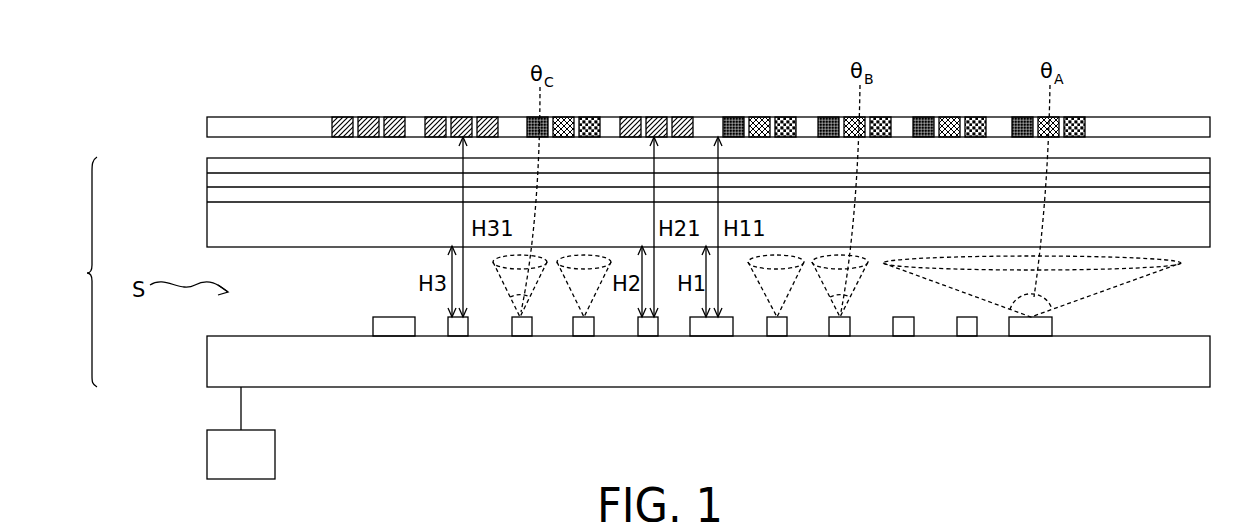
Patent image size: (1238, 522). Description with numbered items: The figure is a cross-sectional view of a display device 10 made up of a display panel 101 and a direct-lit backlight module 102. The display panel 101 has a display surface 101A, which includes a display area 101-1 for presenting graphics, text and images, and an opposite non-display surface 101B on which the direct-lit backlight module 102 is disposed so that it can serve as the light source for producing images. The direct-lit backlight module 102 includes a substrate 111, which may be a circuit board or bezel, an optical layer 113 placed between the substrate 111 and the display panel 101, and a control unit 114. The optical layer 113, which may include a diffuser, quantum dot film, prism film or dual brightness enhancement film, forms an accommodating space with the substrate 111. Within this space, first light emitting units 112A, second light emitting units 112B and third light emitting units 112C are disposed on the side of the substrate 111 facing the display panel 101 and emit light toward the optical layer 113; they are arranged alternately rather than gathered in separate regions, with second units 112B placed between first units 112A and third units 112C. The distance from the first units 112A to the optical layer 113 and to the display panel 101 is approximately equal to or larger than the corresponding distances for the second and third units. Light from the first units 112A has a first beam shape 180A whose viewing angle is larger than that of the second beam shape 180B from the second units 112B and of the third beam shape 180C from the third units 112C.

The display device 10 is at (104, 57).
The display panel 101 is at (207, 125).
The display area 101-1 is at (467, 105).
The display surface 101A is at (952, 117).
The non-display surface 101B is at (926, 148).
The direct-lit backlight module 102 is at (70, 272).
The substrate 111 is at (207, 358).
The first light emitting units 112A is at (392, 327).
The second light emitting units 112B is at (648, 327).
The third light emitting units 112C is at (460, 327).
The optical layer 113 is at (200, 203).
The control unit 114 is at (207, 453).
The first beam shape 180A is at (1107, 292).
The second beam shape 180B is at (858, 278).
The third beam shape 180C is at (510, 292).